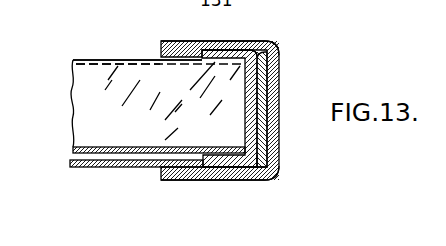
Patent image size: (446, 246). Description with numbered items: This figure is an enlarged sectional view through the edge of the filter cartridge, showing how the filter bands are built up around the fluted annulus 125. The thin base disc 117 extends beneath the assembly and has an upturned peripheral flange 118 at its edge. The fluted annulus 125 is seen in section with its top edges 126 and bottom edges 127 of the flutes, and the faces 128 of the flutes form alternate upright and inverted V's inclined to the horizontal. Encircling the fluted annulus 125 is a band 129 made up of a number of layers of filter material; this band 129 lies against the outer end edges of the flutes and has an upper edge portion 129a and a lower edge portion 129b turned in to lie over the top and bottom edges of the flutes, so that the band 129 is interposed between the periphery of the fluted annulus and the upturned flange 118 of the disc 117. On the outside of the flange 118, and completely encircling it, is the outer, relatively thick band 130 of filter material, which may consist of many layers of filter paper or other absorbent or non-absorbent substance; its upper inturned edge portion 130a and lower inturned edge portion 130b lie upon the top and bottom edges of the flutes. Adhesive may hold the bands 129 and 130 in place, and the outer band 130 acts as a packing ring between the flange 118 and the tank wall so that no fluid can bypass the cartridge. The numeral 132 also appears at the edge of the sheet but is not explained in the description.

The backing plate 117 is at (118, 169).
The intermediate frame layer 118 is at (262, 100).
The top surface of panel 125 is at (100, 58).
The coating layer 126 is at (137, 58).
The support plate 127 is at (76, 150).
The glass panel 128 is at (86, 109).
The inner frame channel 129 is at (252, 80).
The upper flange of inner channel 129a is at (268, 46).
The lower flange of inner channel 129b is at (237, 163).
The outer frame channel 130 is at (280, 140).
The upper flange of outer channel 130a is at (241, 41).
The lower flange of outer channel 130b is at (179, 181).
The adjacent figure element 132 is at (423, 8).